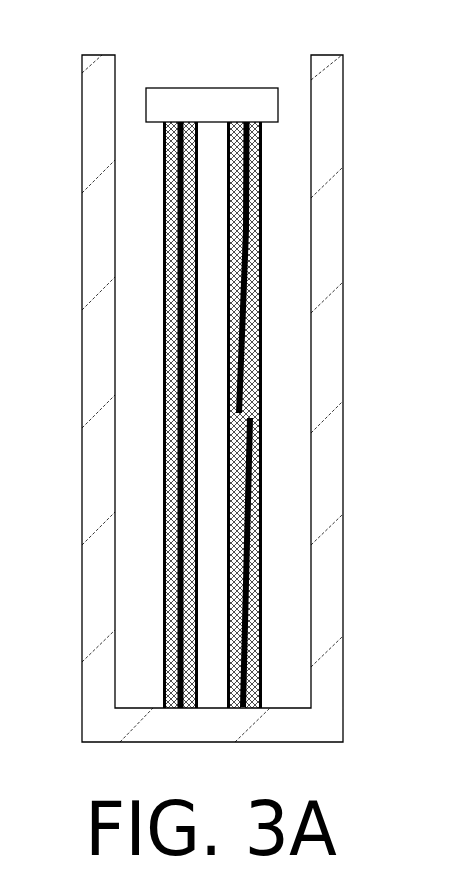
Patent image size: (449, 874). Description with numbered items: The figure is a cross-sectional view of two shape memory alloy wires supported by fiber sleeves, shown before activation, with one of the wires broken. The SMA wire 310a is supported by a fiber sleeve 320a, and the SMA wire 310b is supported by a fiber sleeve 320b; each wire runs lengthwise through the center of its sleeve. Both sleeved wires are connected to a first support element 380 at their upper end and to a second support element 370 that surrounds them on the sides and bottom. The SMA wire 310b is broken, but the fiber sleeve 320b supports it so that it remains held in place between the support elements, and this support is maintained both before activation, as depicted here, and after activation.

The second support element 370 is at (330, 169).
The first support element 380 is at (210, 95).
The fiber sleeve 320a is at (163, 182).
The SMA wire 310a is at (181, 283).
The fiber sleeve 320b is at (263, 495).
The SMA wire 310b is at (245, 335).